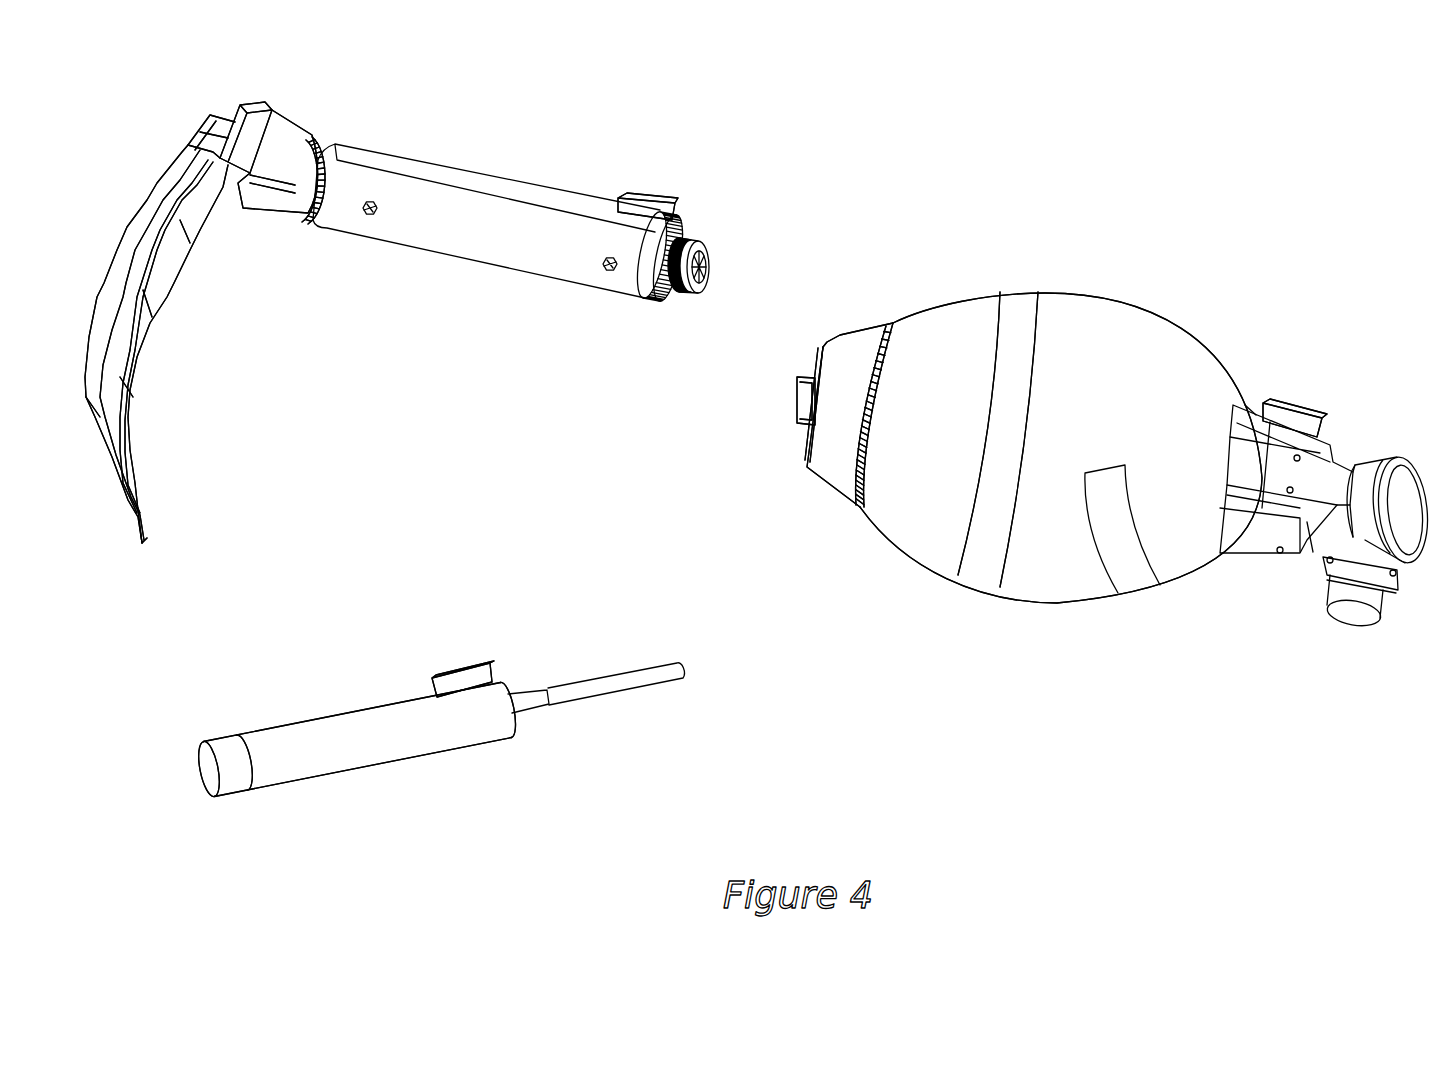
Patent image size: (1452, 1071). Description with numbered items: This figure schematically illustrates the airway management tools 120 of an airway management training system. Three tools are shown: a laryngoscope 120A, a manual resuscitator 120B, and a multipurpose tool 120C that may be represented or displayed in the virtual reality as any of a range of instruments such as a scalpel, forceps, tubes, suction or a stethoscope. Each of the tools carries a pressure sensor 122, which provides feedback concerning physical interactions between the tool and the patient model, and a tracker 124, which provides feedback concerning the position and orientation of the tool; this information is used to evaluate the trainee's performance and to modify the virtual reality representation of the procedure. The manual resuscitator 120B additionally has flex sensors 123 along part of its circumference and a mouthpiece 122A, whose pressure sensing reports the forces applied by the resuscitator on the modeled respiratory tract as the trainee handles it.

The airway management tools 120 is at (854, 58).
The laryngoscope 120A is at (503, 151).
The manual resuscitator 120B is at (924, 290).
The multipurpose tool 120C is at (270, 696).
The pressure sensor 122 is at (148, 198).
The mouthpiece 122A is at (1368, 600).
The flex sensor 123 is at (1142, 592).
The tracker 124 is at (653, 196).